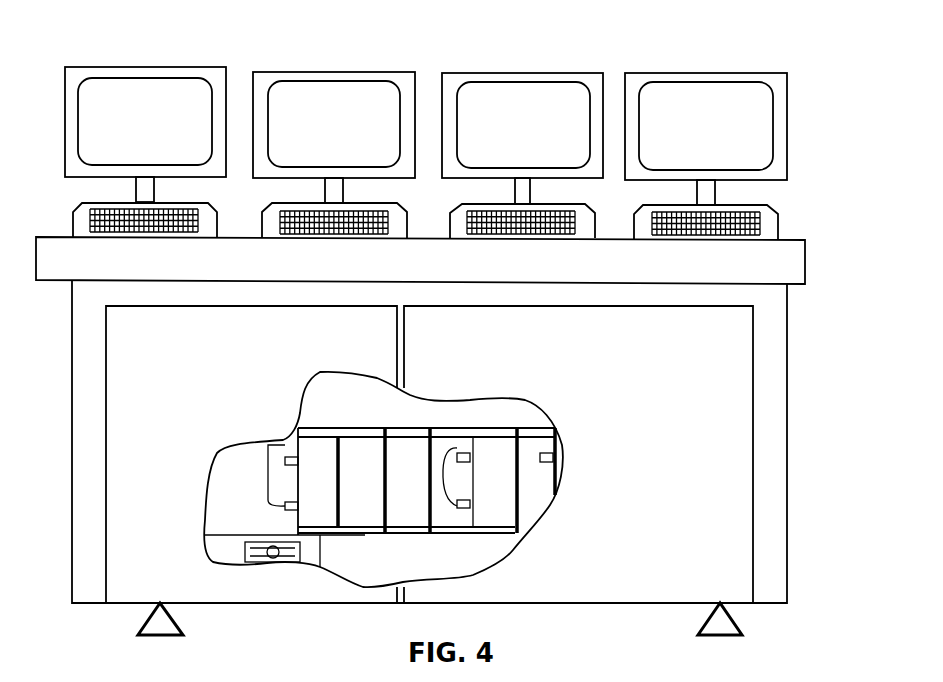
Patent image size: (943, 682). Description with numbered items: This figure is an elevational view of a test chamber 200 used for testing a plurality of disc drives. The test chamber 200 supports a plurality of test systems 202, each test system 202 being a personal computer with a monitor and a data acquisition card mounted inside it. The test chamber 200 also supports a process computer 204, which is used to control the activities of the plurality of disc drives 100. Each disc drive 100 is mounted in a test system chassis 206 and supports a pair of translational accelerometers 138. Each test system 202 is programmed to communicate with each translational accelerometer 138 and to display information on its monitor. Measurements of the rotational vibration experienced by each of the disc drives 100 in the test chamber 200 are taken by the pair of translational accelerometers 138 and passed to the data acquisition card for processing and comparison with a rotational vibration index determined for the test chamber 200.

The test chamber 200 is at (334, 47).
The test system 202 is at (207, 226).
The process computer 204 is at (233, 550).
The test system chassis 206 is at (467, 542).
The disc drive 100 is at (322, 465).
The translational accelerometer 138 is at (290, 455).